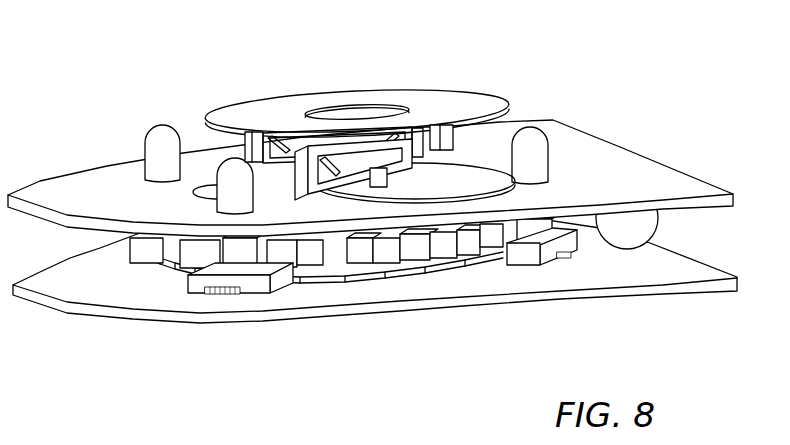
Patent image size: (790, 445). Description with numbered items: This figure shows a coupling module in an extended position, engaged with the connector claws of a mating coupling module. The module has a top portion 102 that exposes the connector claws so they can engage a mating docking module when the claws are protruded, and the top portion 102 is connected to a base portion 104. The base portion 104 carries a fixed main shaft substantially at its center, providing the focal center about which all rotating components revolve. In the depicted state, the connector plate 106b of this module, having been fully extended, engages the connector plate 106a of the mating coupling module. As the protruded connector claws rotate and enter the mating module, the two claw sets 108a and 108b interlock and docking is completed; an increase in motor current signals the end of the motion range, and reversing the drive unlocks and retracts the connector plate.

The top portion 102 is at (629, 192).
The base portion 104 is at (661, 280).
The connector plate 106a is at (262, 117).
The connector plate 106b is at (455, 177).
The claw set 108a is at (347, 172).
The claw set 108b is at (347, 172).